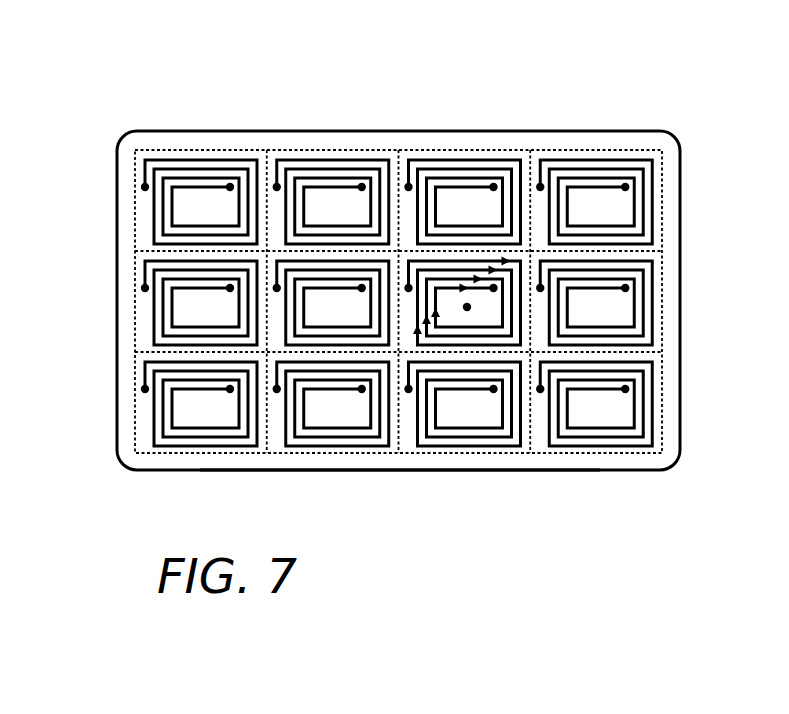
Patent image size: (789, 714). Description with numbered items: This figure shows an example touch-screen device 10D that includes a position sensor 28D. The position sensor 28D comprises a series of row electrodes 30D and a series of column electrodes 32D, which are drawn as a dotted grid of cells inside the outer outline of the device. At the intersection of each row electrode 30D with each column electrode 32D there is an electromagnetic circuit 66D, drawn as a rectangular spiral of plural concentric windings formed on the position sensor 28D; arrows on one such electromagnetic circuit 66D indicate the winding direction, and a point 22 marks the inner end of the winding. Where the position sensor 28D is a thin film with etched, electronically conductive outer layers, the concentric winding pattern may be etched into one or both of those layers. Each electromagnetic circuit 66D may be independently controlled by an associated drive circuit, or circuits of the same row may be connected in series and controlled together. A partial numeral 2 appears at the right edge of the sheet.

The touch-screen device 10D is at (628, 105).
The electromagnetic circuit 66D is at (447, 262).
The coil center terminal 22 is at (467, 307).
The row electrodes 30D is at (672, 307).
The position sensor 28D is at (662, 425).
The column electrodes 32D is at (459, 463).
The truncated reference numeral 2 is at (783, 400).